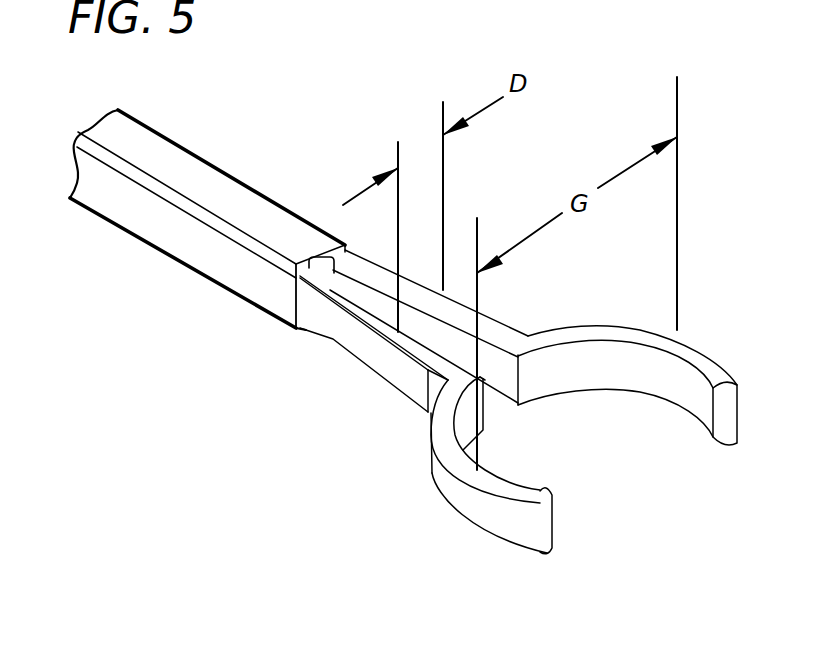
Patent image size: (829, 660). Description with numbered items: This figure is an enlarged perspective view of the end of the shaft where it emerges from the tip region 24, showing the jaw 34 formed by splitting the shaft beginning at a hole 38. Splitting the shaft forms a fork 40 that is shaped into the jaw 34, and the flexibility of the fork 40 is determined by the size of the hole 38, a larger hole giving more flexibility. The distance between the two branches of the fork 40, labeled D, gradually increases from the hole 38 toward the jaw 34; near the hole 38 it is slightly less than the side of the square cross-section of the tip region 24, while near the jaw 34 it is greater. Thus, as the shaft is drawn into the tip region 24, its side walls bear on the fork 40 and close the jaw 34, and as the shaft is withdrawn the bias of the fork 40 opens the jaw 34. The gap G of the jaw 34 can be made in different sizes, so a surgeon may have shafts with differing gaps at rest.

The tip region 24 is at (215, 262).
The hole 38 is at (321, 257).
The fork 40 is at (372, 353).
The jaw 34 is at (475, 508).